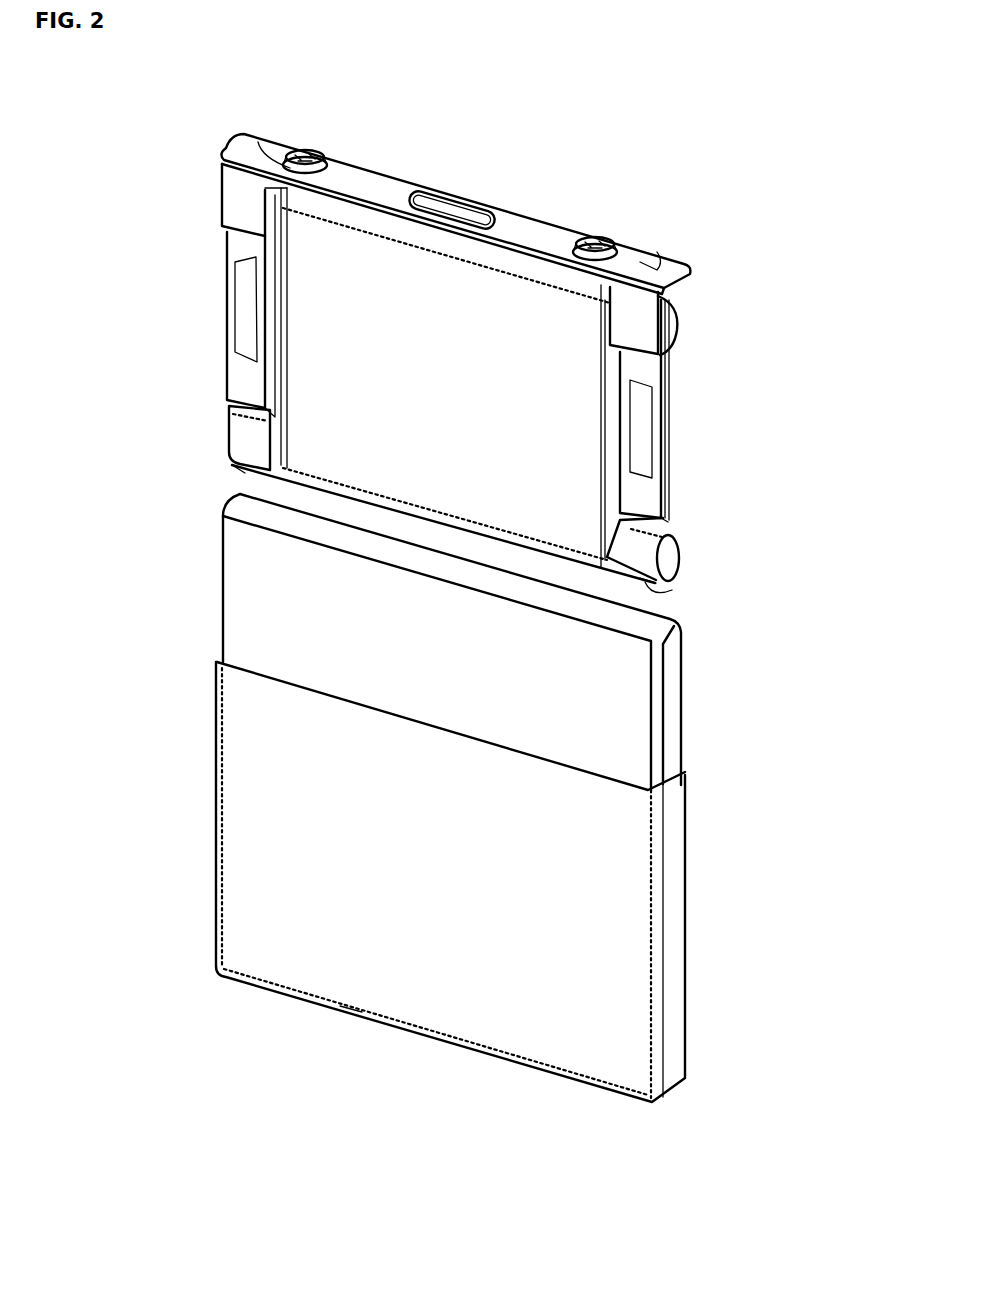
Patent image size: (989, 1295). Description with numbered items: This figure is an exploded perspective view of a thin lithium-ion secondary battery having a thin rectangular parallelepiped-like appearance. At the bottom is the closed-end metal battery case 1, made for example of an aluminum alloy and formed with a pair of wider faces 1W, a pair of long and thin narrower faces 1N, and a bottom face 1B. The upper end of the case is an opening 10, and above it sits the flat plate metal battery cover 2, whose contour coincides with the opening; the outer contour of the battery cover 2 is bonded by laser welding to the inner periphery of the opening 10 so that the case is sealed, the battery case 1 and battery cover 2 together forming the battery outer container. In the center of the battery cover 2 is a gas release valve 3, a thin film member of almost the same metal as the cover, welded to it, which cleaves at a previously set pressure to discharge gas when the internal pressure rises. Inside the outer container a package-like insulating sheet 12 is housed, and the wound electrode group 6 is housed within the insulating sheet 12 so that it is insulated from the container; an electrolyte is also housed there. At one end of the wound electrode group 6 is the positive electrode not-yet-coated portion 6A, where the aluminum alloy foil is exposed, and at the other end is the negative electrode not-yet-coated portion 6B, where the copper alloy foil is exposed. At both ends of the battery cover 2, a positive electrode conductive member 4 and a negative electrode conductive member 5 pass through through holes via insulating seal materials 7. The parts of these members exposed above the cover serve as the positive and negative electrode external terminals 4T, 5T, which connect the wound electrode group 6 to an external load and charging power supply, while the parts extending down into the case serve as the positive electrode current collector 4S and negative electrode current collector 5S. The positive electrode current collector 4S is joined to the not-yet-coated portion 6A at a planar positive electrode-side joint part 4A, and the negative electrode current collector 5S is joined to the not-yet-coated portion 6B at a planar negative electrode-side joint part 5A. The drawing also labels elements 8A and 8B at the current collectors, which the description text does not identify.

The battery case 1 is at (243, 923).
The narrower faces 1N is at (684, 910).
The wider faces 1W is at (362, 970).
The bottom face 1B is at (680, 1090).
The battery cover 2 is at (672, 263).
The gas release valve 3 is at (456, 194).
The positive electrode conductive member 4 is at (226, 252).
The positive electrode-side joint part 4A is at (245, 306).
The positive electrode current collector 4S is at (244, 370).
The positive electrode external terminal 4T is at (306, 148).
The negative electrode conductive member 5 is at (664, 366).
The negative electrode-side joint part 5A is at (640, 432).
The negative electrode current collector 5S is at (646, 502).
The negative electrode external terminal 5T is at (596, 236).
The wound electrode group 6 is at (440, 395).
The positive electrode not-yet-coated portion 6A is at (252, 470).
The negative electrode not-yet-coated portion 6B is at (642, 578).
The insulating seal material 7 is at (258, 146).
The positive side insulating member 8A is at (221, 190).
The negative side insulating member 8B is at (672, 320).
The opening of the battery case 10 is at (680, 728).
The insulating sheet 12 is at (232, 598).